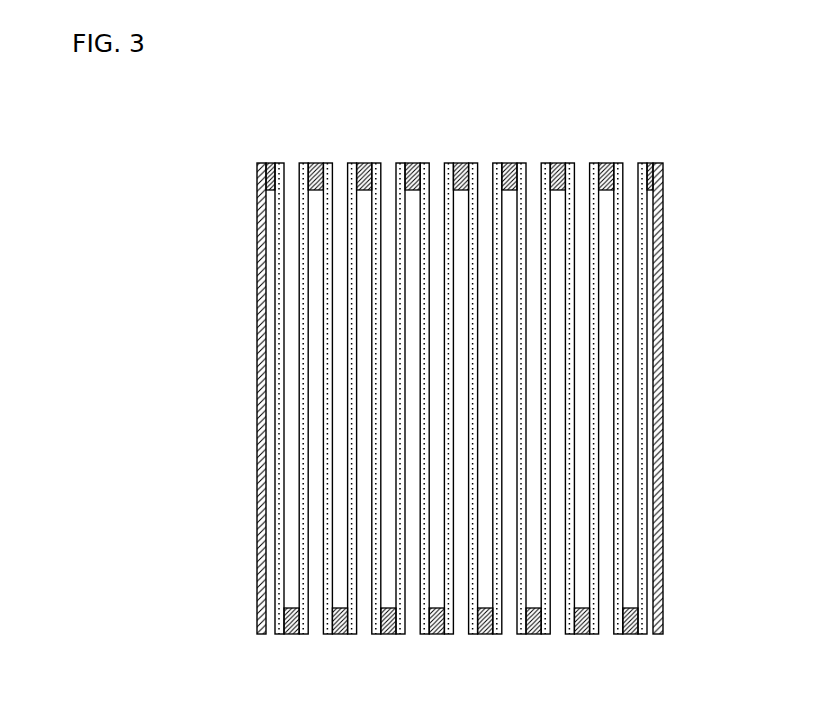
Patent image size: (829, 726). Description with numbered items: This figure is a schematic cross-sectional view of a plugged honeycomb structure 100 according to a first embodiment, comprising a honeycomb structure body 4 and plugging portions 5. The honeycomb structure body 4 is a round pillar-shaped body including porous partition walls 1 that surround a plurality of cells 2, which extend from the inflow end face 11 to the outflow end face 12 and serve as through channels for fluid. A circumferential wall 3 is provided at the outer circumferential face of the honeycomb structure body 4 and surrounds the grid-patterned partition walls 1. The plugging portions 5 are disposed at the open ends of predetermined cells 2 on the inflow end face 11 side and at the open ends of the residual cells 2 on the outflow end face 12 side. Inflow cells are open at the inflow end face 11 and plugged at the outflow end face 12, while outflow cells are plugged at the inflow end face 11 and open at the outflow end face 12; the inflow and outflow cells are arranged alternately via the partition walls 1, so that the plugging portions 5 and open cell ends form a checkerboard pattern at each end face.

The plugged honeycomb structure 100 is at (722, 53).
The partition walls 1 is at (519, 170).
The cells 2 is at (437, 163).
The circumferential wall 3 is at (660, 240).
The honeycomb structure body 4 is at (674, 335).
The plugging portions 5 is at (603, 172).
The inflow end face 11 is at (281, 149).
The outflow end face 12 is at (281, 645).